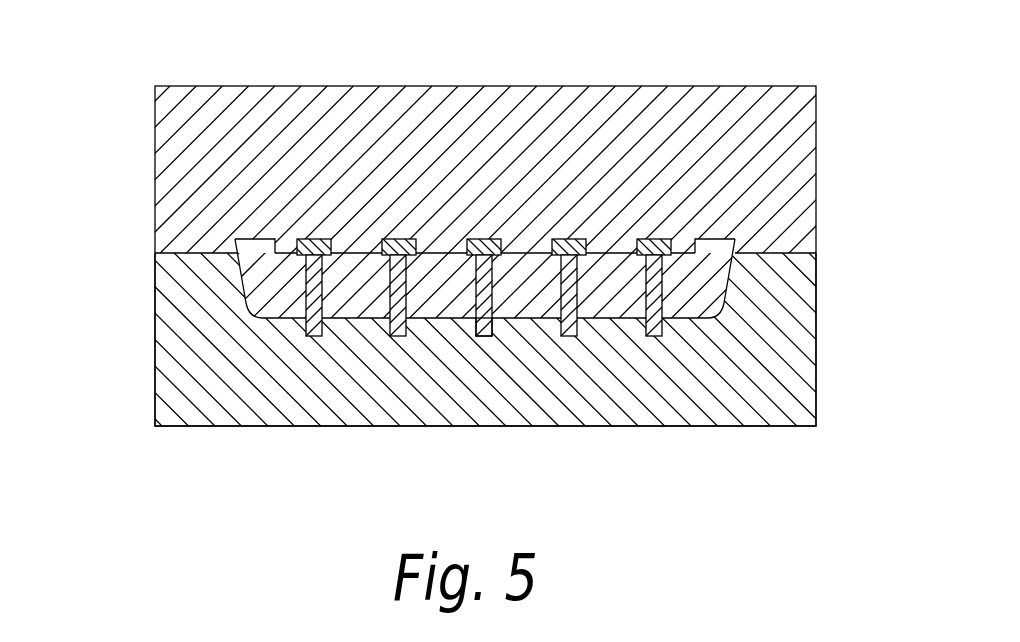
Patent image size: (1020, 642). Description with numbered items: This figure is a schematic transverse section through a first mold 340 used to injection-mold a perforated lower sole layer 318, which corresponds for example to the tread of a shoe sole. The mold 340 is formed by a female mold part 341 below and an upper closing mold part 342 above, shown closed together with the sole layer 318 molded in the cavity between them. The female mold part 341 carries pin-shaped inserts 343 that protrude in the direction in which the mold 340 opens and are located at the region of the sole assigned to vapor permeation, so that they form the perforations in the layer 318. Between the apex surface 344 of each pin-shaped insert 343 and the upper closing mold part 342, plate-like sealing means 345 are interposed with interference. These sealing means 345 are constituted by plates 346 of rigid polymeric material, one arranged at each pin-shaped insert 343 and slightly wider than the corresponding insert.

The mold 340 is at (150, 283).
The female mold part 341 is at (718, 396).
The upper closing mold part 342 is at (713, 123).
The pin-shaped inserts 343 is at (487, 338).
The apex surface 344 is at (475, 277).
The plate-like sealing means 345 is at (563, 234).
The plates 346 is at (399, 242).
The perforated lower sole layer 318 is at (695, 275).